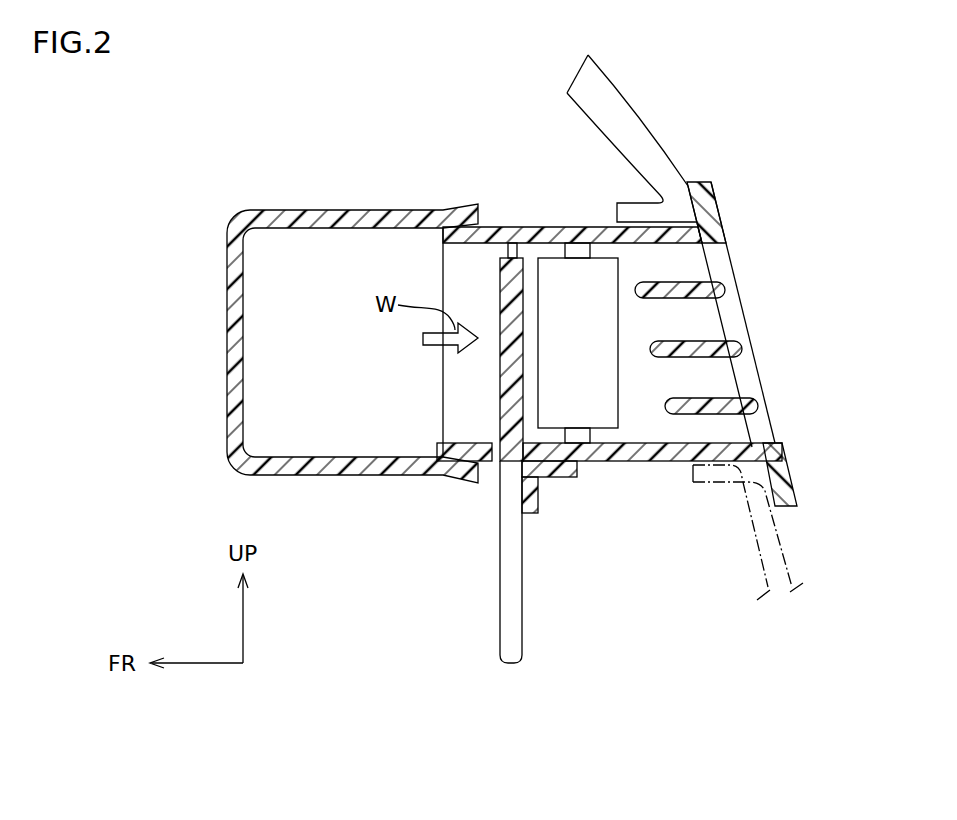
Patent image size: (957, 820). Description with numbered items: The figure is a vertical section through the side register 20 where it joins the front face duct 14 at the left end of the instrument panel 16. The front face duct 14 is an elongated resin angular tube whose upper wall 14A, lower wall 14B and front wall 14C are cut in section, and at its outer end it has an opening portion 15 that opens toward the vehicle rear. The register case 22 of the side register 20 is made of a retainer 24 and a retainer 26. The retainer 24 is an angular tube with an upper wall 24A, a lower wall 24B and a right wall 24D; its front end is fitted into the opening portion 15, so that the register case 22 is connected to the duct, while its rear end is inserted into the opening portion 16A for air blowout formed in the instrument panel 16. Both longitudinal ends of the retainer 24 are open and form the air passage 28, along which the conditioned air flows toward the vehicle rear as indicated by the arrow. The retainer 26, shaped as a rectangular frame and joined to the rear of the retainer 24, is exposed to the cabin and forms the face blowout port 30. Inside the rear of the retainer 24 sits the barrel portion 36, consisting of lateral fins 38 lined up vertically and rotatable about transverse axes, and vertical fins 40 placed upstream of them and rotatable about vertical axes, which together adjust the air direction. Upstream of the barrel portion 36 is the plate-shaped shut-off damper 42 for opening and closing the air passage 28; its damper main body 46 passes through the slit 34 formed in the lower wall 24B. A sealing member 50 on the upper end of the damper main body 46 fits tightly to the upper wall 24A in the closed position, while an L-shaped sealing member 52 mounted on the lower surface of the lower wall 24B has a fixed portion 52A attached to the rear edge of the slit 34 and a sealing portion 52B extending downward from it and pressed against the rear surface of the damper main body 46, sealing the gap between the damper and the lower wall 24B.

The front face duct 14 is at (305, 337).
The upper wall 14A is at (362, 208).
The lower wall 14B is at (350, 478).
The front wall 14C is at (227, 352).
The opening portion 15 is at (457, 252).
The instrument panel 16 is at (656, 130).
The opening portion for air blowout 16A is at (732, 447).
The side register 20 is at (804, 220).
The register case 22 is at (546, 349).
The retainer 24 is at (546, 349).
The upper wall 24A is at (593, 225).
The lower wall 24B is at (672, 462).
The right wall 24D is at (452, 276).
The retainer 26 is at (724, 205).
The air passage 28 is at (669, 327).
The face blowout port 30 is at (733, 252).
The slit 34 is at (505, 462).
The barrel portion 36 is at (715, 383).
The lateral fins 38 is at (757, 406).
The vertical fins 40 is at (612, 394).
The shut-off damper 42 is at (498, 415).
The damper main body 46 is at (452, 460).
The sealing member 50 is at (510, 250).
The sealing member 52 is at (582, 548).
The fixed portion 52A is at (565, 478).
The sealing portion 52B is at (551, 535).